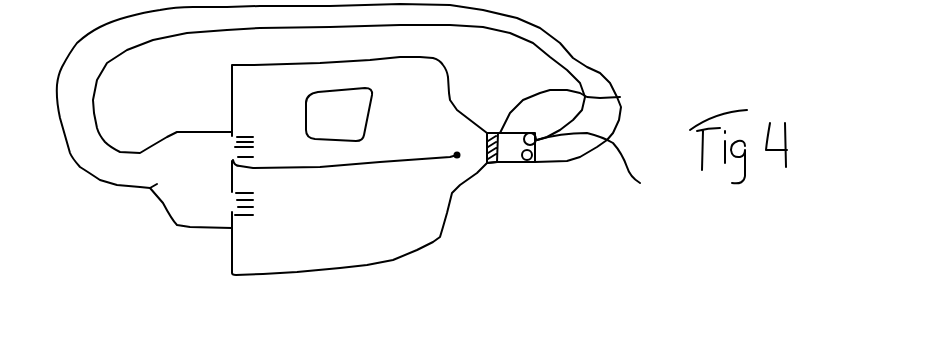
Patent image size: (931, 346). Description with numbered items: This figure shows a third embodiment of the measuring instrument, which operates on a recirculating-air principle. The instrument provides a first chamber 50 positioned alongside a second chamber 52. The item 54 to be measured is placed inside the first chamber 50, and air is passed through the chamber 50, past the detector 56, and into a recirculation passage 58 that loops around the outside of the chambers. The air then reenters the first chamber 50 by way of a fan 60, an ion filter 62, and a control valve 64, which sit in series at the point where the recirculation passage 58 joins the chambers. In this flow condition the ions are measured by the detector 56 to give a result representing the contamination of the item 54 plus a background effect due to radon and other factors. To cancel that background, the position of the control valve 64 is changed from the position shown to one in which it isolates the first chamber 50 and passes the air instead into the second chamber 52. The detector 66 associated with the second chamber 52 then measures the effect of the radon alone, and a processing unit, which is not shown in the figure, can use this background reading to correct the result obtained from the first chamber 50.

The first chamber 50 is at (413, 97).
The second chamber 52 is at (417, 227).
The item 54 is at (337, 118).
The detector 56 is at (233, 148).
The recirculation passage 58 is at (72, 153).
The fan 60 is at (605, 168).
The ion filter 62 is at (620, 97).
The control valve 64 is at (457, 155).
The detector 66 is at (235, 210).